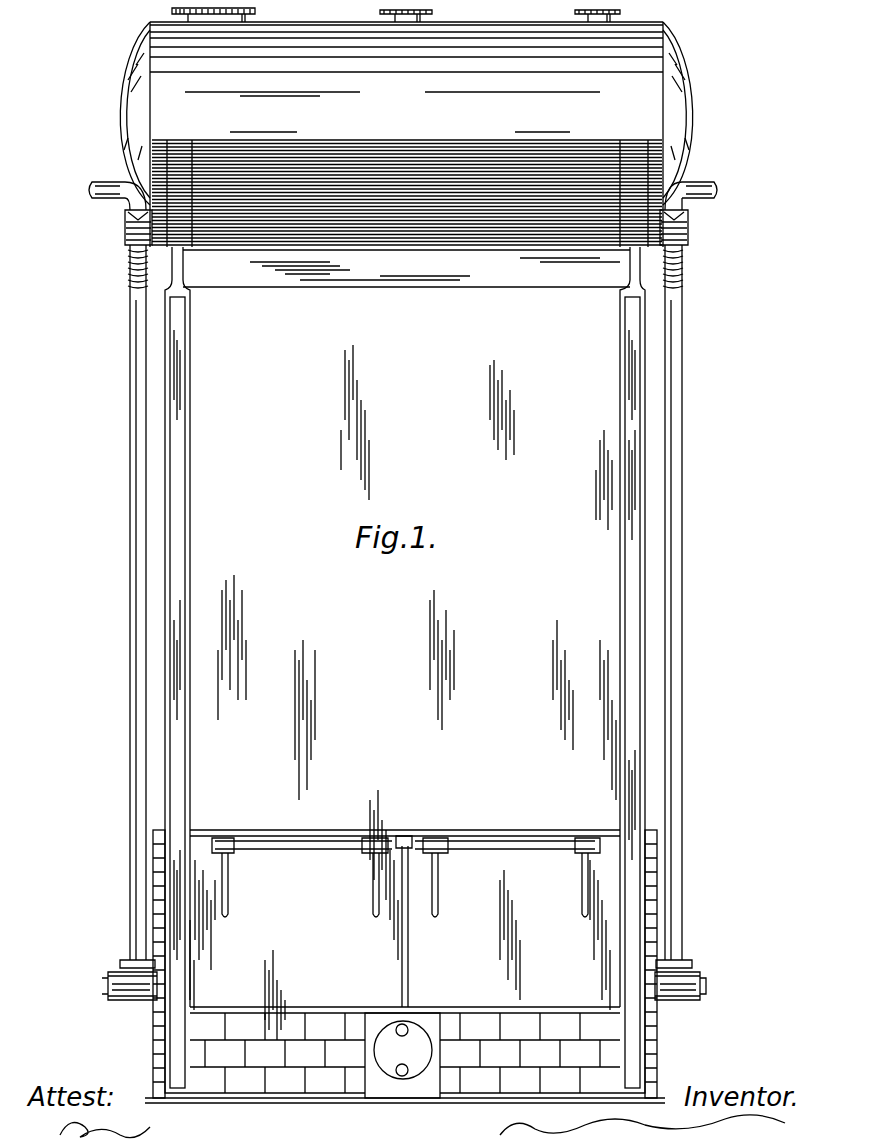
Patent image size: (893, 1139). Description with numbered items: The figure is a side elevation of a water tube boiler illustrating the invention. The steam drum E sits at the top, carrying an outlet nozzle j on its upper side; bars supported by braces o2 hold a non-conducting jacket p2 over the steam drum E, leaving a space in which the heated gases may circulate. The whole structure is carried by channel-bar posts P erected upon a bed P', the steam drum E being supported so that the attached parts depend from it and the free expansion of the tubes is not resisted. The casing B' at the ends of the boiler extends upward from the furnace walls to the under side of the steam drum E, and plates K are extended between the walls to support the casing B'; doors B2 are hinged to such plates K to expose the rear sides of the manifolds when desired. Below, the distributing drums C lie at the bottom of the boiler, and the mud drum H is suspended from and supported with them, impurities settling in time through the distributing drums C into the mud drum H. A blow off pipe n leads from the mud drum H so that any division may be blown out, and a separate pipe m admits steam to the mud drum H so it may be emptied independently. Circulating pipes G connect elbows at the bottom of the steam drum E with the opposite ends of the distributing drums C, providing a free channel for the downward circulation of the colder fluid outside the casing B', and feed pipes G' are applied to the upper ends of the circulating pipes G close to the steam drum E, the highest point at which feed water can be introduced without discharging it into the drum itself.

The steam drum E is at (418, 127).
The braces o2 is at (177, 146).
The non-conducting jacket p2 is at (385, 107).
The outlet nozzle j is at (404, 28).
The channel-bar posts P is at (405, 692).
The casing B' is at (417, 652).
The plates K is at (493, 831).
The doors B2 is at (405, 943).
The mud drum H is at (402, 1055).
The separate pipe m is at (400, 1036).
The blow off pipe n is at (400, 1077).
The bed P' is at (412, 1115).
The circulating pipes G is at (417, 589).
The feed pipes G' is at (404, 193).
The distributing drums C is at (397, 988).